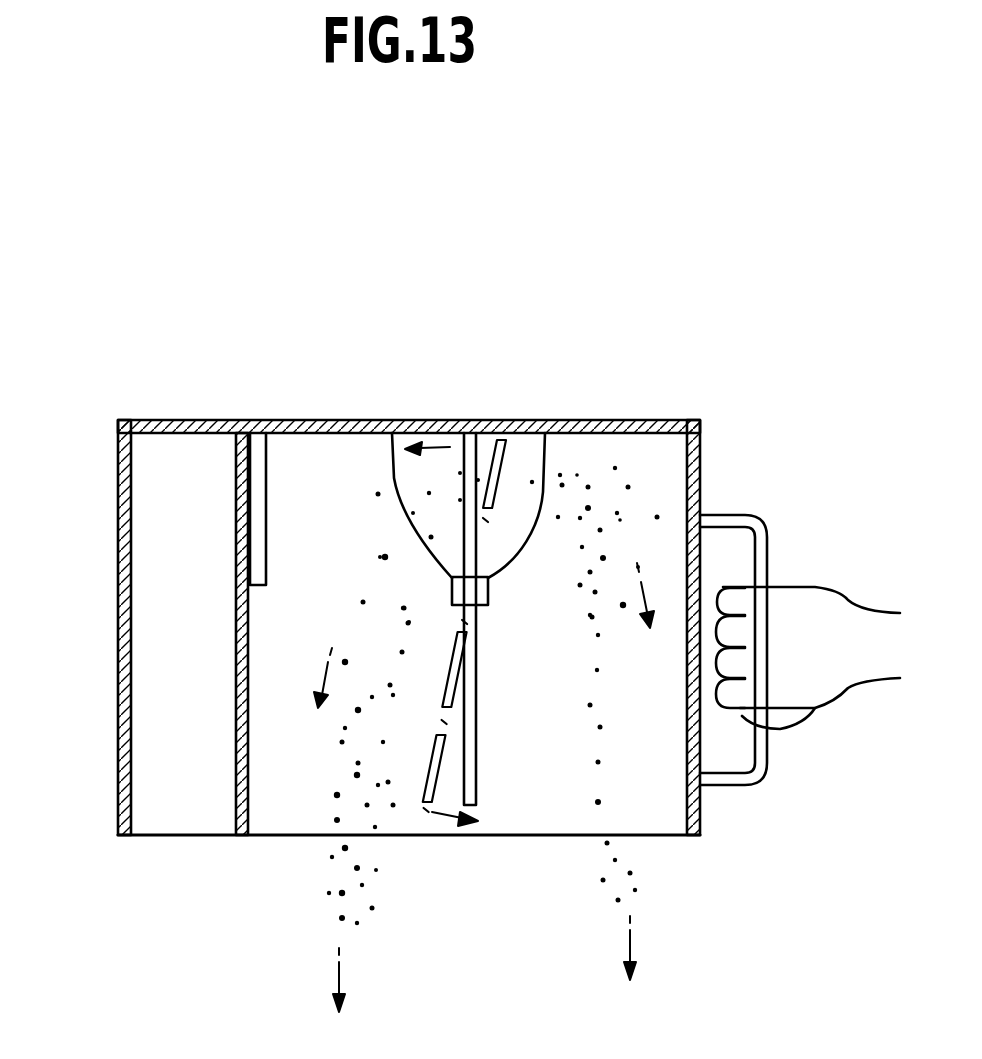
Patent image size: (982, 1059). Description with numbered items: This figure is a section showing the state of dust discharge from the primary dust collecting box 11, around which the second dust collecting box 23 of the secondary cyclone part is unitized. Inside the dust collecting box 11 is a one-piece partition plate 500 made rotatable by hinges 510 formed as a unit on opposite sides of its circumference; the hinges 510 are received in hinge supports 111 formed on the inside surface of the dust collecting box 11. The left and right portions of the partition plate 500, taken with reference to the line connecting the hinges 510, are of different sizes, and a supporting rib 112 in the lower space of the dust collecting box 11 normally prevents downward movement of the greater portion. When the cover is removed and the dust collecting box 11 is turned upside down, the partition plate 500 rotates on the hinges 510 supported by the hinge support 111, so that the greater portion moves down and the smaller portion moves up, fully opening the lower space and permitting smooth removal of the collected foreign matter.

The dust collecting box 11 is at (662, 420).
The second dust collecting box 23 is at (118, 625).
The hinge support 111 is at (392, 433).
The supporting rib 112 is at (255, 455).
The partition plate 500 is at (477, 794).
The hinge 510 is at (543, 452).